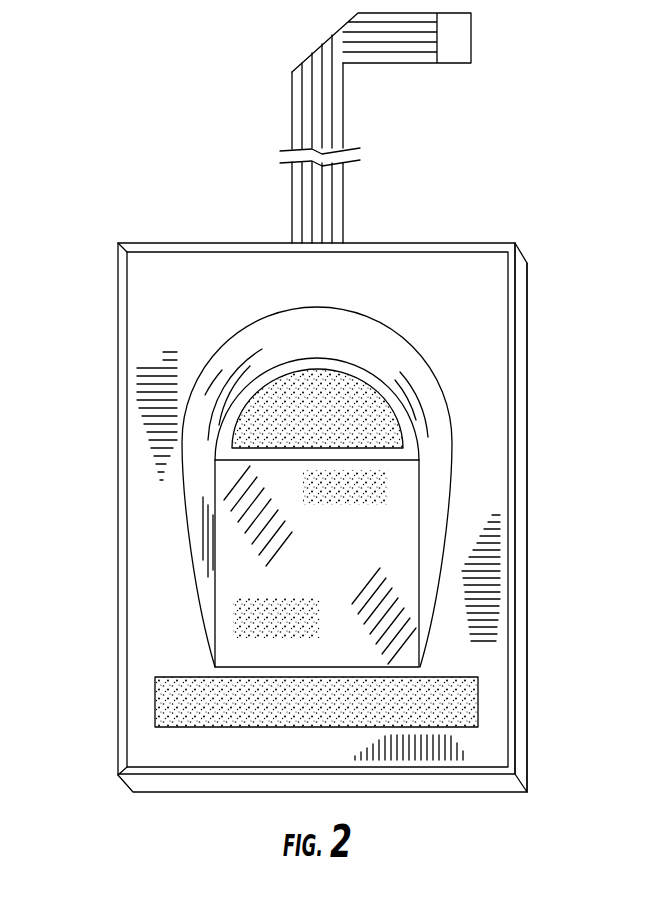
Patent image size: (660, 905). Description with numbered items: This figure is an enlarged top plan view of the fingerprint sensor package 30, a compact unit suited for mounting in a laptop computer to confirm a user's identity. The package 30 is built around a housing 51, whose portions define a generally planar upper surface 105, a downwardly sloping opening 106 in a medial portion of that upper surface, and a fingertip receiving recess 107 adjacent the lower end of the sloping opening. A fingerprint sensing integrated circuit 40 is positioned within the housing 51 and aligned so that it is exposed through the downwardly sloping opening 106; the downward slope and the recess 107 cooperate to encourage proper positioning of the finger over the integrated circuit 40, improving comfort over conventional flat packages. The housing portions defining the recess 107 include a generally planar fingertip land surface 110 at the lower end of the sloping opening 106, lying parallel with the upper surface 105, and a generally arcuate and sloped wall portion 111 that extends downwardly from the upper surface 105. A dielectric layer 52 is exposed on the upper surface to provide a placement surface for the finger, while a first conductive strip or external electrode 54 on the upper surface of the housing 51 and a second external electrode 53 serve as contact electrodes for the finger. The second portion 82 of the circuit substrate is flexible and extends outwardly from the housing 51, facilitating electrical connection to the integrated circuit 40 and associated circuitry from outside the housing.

The fingerprint sensor package 30 is at (484, 200).
The fingerprint sensing integrated circuit 40 is at (400, 653).
The housing 51 is at (529, 299).
The dielectric layer 52 is at (383, 553).
The second external electrode 53 is at (383, 430).
The first conductive strip or external electrode 54 is at (212, 722).
The second portion of circuit substrate 82 is at (292, 210).
The generally planar upper surface 105 is at (149, 637).
The downwardly sloping opening 106 is at (233, 580).
The fingertip receiving recess 107 is at (268, 376).
The fingertip land surface 110 is at (387, 393).
The arcuate and sloped wall portion 111 is at (363, 337).